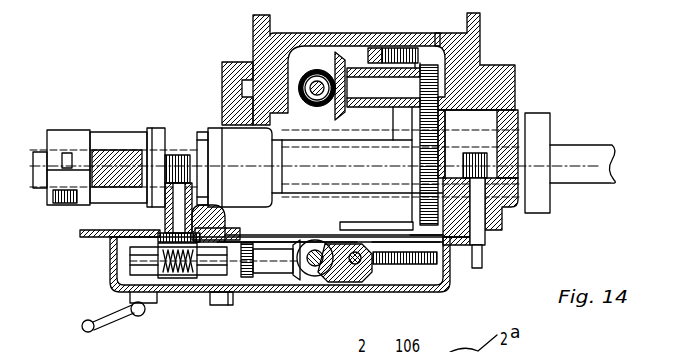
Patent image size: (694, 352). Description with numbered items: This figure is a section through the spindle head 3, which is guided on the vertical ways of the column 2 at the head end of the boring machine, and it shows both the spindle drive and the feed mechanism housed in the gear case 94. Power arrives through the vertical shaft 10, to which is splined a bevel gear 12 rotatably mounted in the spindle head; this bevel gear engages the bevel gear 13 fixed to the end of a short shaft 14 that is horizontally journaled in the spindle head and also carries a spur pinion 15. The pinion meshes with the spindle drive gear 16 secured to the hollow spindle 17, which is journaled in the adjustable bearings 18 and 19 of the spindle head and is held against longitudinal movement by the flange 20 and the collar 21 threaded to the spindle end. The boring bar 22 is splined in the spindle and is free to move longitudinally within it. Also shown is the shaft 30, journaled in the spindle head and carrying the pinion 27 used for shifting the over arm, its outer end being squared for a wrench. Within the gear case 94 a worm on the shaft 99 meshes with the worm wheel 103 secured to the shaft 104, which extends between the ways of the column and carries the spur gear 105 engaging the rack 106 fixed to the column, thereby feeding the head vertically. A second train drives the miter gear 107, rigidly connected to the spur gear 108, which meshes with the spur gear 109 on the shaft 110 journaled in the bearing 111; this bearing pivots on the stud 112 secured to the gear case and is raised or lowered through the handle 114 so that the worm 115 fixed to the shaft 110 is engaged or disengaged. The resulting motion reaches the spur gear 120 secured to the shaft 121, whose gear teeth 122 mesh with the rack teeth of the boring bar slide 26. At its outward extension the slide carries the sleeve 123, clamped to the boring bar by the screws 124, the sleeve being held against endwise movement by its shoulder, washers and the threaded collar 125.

The column 2 is at (481, 14).
The spindle head 3 is at (224, 68).
The vertical shaft 10 is at (316, 96).
The bevel gear 12 is at (313, 73).
The bevel gear 13 is at (341, 58).
The short shaft 14 is at (376, 80).
The spur pinion 15 is at (430, 65).
The spindle drive gear 16 is at (428, 175).
The hollow spindle 17 is at (330, 187).
The adjustable bearing 18 is at (505, 208).
The adjustable bearing 19 is at (266, 195).
The flange 20 is at (545, 113).
The collar 21 is at (202, 134).
The boring bar 22 is at (592, 145).
The boring bar slide 26 is at (118, 152).
The pinion 27 is at (488, 160).
The shaft 30 is at (483, 265).
The gear case 94 is at (431, 293).
The shaft 99 is at (351, 283).
The worm wheel 103 is at (400, 266).
The shaft 104 is at (395, 226).
The spur gear 105 is at (400, 48).
The rack 106 is at (374, 48).
The miter gear 107 is at (298, 281).
The spur gear 108 is at (260, 281).
The spur gear 109 is at (246, 279).
The shaft 110 is at (210, 262).
The bearing 111 is at (128, 252).
The stud 112 is at (226, 306).
The handle 114 is at (84, 321).
The worm 115 is at (174, 279).
The spur gear 120 is at (160, 234).
The shaft 121 is at (176, 208).
The gear teeth 122 is at (172, 139).
The sleeve 123 is at (61, 132).
The screws 124 is at (57, 204).
The threaded collar 125 is at (159, 128).